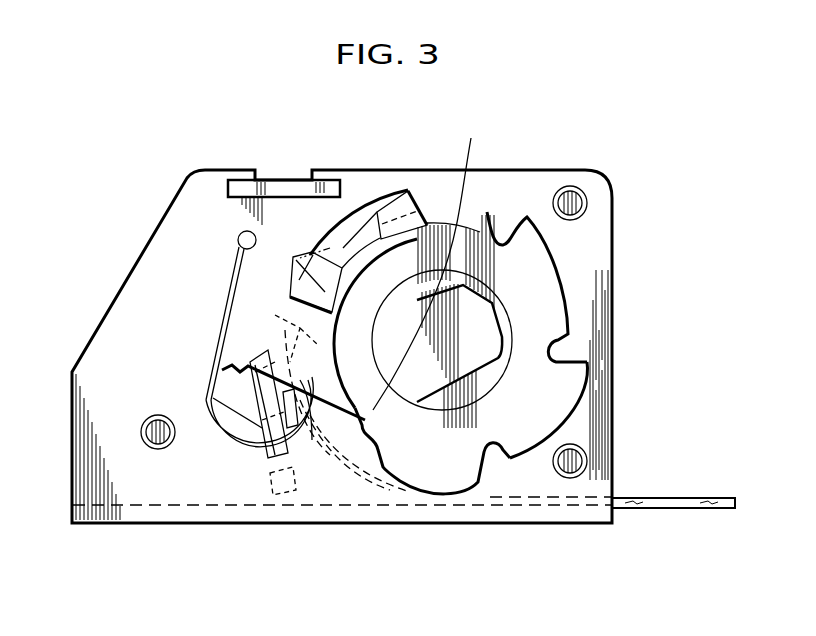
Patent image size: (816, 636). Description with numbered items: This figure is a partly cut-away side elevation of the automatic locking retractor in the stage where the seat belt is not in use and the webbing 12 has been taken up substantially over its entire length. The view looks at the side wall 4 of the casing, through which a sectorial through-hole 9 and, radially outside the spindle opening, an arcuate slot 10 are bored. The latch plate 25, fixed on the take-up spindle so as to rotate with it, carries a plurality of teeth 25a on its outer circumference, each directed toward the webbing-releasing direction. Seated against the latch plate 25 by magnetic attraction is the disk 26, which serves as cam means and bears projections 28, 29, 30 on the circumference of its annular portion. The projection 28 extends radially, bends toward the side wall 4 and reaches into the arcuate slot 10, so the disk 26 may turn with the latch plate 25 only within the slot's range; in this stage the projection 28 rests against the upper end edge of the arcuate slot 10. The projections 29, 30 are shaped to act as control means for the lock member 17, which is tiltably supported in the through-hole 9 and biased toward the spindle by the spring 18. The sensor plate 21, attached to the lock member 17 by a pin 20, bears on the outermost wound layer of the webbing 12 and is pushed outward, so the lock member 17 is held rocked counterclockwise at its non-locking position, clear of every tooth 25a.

The side wall 4 is at (525, 190).
The sectorial through-hole 9 is at (243, 435).
The arcuate slot 10 is at (377, 212).
The webbing 12 is at (686, 510).
The lock member 17 is at (262, 458).
The spring 18 is at (228, 278).
The pin 20 is at (300, 440).
The sensor plate 21 is at (315, 440).
The latch plate 25 is at (507, 300).
The tooth 25a is at (560, 375).
The disk 26 is at (442, 260).
The projection 28 is at (414, 238).
The projection 29 is at (303, 257).
The projection 30 is at (364, 450).